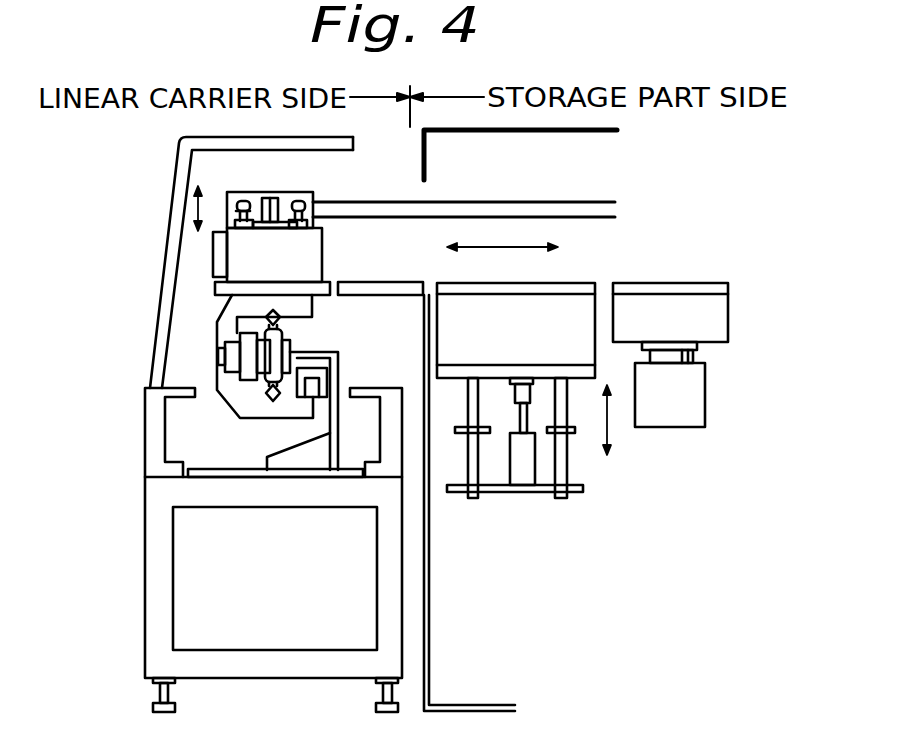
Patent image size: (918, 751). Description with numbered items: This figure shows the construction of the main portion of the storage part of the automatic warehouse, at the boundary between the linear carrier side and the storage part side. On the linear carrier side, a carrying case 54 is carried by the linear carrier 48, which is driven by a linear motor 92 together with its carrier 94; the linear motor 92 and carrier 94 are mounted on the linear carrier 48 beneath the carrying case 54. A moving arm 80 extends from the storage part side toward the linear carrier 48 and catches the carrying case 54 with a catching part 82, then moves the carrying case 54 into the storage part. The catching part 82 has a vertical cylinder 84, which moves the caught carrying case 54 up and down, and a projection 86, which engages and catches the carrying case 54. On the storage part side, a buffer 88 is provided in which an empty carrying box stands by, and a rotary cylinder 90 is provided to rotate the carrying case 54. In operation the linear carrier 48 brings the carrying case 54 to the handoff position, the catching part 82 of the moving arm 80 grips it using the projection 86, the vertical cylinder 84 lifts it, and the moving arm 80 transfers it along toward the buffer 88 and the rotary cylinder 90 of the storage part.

The linear carrier 48 is at (282, 632).
The carrying case 54 is at (213, 260).
The moving arm 80 is at (552, 201).
The catching part 82 is at (268, 190).
The vertical cylinder 84 is at (228, 222).
The projection 86 is at (266, 228).
The buffer 88 is at (573, 297).
The rotary cylinder 90 is at (718, 308).
The linear motor 92 is at (246, 389).
The carrier 94 is at (215, 333).